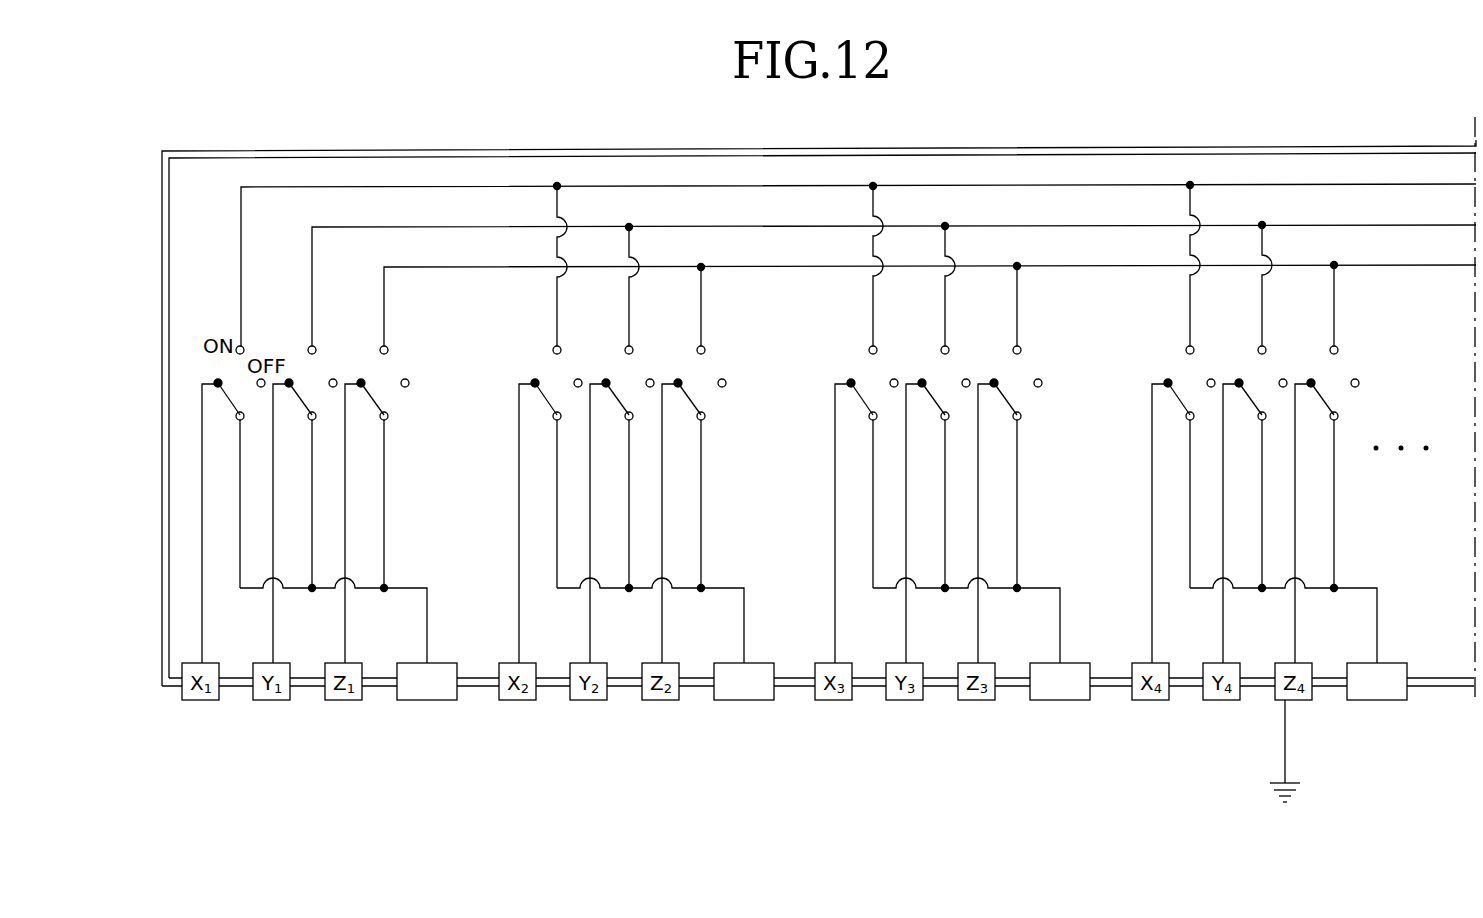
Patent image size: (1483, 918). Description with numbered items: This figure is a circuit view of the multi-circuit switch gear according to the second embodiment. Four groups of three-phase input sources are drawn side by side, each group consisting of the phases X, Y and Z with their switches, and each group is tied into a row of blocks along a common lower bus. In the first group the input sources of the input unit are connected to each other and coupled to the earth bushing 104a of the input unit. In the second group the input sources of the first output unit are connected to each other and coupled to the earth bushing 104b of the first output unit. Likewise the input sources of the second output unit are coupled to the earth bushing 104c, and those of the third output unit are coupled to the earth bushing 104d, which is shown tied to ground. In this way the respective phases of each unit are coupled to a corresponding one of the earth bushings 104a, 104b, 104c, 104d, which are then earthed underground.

The earth bushing of the input unit 104a is at (427, 681).
The earth bushing of the first output unit 104b is at (744, 681).
The earth bushing of the second output unit 104c is at (1060, 681).
The earth bushing of the third output unit 104d is at (1377, 681).